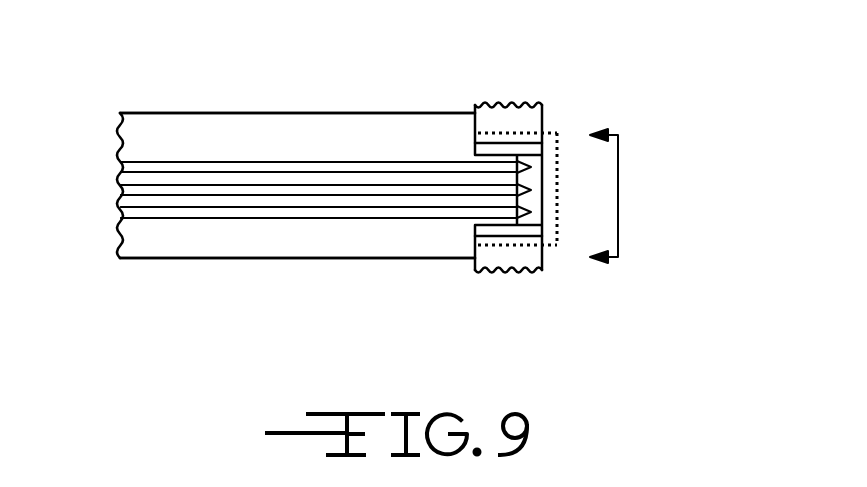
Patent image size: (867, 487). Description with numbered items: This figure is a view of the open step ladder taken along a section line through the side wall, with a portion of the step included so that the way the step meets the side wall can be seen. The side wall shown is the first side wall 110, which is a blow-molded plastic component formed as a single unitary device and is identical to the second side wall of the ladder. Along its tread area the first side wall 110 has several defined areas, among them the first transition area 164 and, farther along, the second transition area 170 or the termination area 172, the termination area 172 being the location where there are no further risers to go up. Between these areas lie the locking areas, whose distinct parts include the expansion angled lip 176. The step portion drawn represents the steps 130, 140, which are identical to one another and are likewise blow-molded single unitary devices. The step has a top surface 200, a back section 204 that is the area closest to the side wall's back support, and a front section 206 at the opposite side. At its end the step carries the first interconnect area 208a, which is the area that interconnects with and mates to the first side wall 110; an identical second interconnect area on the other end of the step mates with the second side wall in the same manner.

The first side wall 110 is at (517, 104).
The first step 130 is at (190, 259).
The second step 140 is at (319, 243).
The first transition area 164 is at (548, 271).
The second transition area 170 is at (547, 131).
The termination area 172 is at (585, 151).
The expansion angled lip 176 is at (558, 135).
The top surface 200 is at (365, 128).
The back section 204 is at (257, 112).
The front section 206 is at (382, 259).
The first interconnect area 208a is at (558, 197).